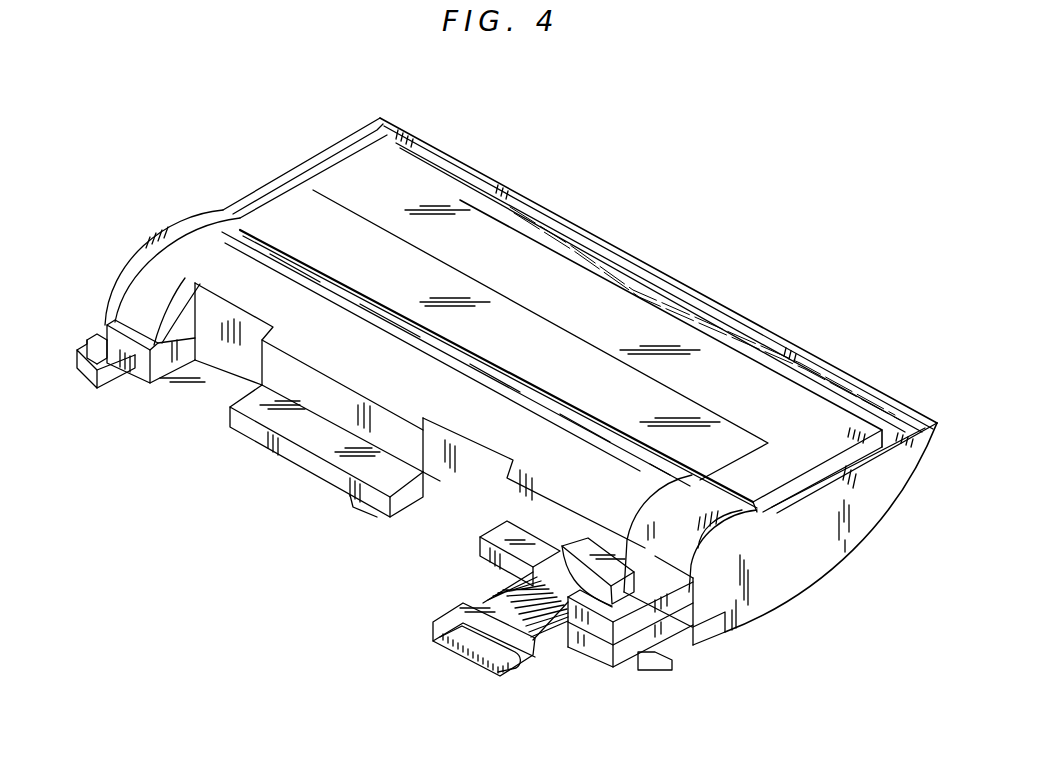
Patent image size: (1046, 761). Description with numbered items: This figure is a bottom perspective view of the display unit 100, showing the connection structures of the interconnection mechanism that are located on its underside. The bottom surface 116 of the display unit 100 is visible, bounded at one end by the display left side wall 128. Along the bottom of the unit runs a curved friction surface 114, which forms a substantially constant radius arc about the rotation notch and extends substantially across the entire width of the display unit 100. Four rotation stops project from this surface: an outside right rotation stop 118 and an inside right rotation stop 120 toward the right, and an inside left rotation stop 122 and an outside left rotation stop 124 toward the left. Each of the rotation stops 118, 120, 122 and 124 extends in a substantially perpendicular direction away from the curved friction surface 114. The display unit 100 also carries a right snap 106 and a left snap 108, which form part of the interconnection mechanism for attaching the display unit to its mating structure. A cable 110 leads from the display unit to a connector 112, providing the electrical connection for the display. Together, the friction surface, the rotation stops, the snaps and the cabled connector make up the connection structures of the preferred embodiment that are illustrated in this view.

The display unit 100 is at (490, 199).
The right snap 106 is at (82, 383).
The left snap 108 is at (633, 662).
The cable 110 is at (487, 608).
The connector 112 is at (463, 618).
The curved friction surface 114 is at (255, 243).
The bottom surface 116 is at (307, 174).
The outside right rotation stop 118 is at (148, 283).
The inside right rotation stop 120 is at (250, 396).
The inside left rotation stop 122 is at (480, 537).
The outside left rotation stop 124 is at (590, 606).
The display left side wall 128 is at (796, 579).